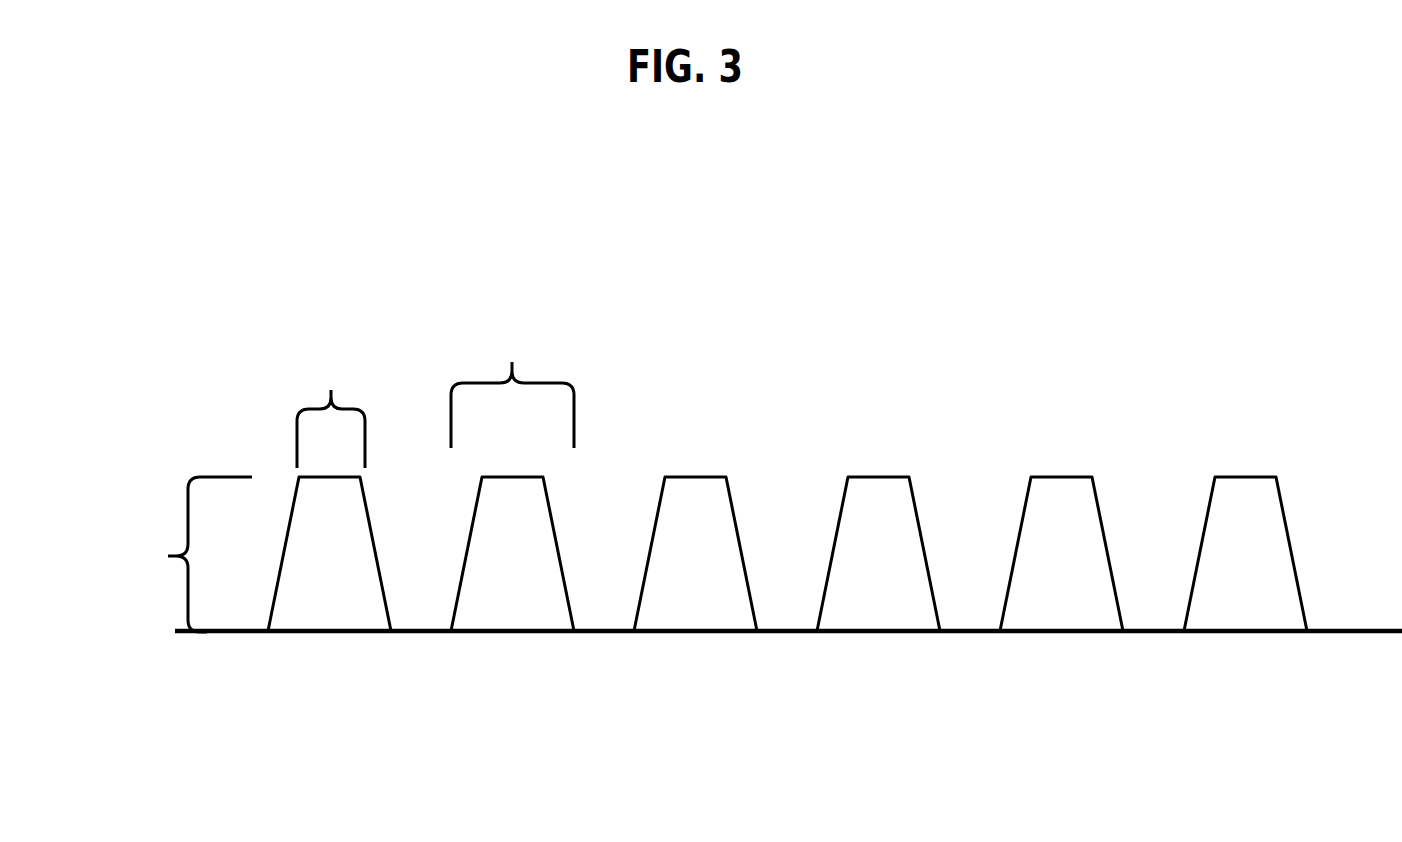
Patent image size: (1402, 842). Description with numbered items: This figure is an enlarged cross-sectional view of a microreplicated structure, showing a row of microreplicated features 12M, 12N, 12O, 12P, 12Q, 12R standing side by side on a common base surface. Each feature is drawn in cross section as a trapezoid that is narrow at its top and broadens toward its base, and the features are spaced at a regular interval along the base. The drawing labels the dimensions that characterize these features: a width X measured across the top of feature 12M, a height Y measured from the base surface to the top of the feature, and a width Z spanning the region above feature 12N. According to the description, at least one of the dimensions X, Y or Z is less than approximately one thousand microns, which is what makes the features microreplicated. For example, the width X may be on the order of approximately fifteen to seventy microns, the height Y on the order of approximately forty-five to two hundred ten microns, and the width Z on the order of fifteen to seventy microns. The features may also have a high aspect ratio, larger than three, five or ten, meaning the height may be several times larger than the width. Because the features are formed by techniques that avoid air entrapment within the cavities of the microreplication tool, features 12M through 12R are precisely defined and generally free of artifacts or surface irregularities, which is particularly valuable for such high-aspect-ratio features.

The microreplicated feature 12M is at (332, 601).
The microreplicated feature 12N is at (515, 601).
The microreplicated feature 12O is at (698, 601).
The microreplicated feature 12P is at (881, 601).
The microreplicated feature 12Q is at (1058, 601).
The microreplicated feature 12R is at (1252, 601).
The width X is at (331, 410).
The height Y is at (179, 554).
The width Z is at (512, 385).